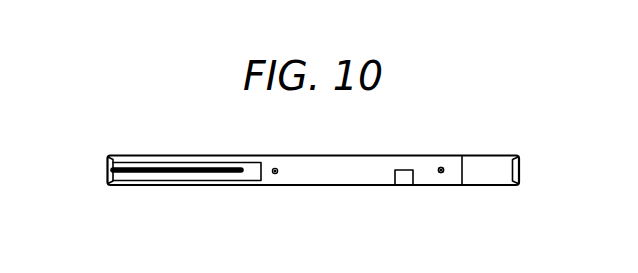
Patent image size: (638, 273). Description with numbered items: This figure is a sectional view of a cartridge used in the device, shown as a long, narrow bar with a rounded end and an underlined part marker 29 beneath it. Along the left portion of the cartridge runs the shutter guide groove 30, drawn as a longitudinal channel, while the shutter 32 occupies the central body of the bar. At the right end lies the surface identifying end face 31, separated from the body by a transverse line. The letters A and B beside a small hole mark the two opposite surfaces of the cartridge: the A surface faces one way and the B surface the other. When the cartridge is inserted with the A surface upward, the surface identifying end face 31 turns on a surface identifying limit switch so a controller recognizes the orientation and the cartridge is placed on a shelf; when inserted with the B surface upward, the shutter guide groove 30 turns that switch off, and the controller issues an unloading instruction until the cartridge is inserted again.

The locking bar 29 is at (298, 225).
The shutter guide groove 30 is at (191, 165).
The surface identifying end face 31 is at (487, 163).
The shutter 32 is at (331, 163).
The A surface A is at (438, 152).
The B surface B is at (437, 189).